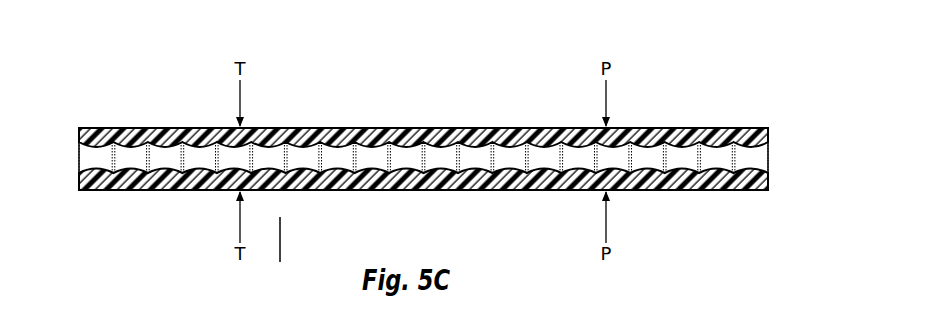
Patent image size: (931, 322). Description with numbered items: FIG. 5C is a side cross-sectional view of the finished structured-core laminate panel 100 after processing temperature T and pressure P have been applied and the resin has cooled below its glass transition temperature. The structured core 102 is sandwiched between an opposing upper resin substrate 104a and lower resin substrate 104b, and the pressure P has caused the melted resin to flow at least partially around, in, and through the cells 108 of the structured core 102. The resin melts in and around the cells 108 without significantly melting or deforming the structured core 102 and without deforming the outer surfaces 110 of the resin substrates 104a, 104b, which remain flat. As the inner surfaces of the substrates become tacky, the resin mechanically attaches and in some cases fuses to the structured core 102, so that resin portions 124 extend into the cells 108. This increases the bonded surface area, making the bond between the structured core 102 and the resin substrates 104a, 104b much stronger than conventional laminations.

The structured-core laminate panel 100 is at (93, 50).
The structured core 102 is at (76, 162).
The upper resin substrate 104a is at (120, 128).
The lower resin substrate 104b is at (125, 190).
The cells 108 is at (203, 165).
The outer surface 110 is at (677, 128).
The resin portions 124 is at (406, 131).